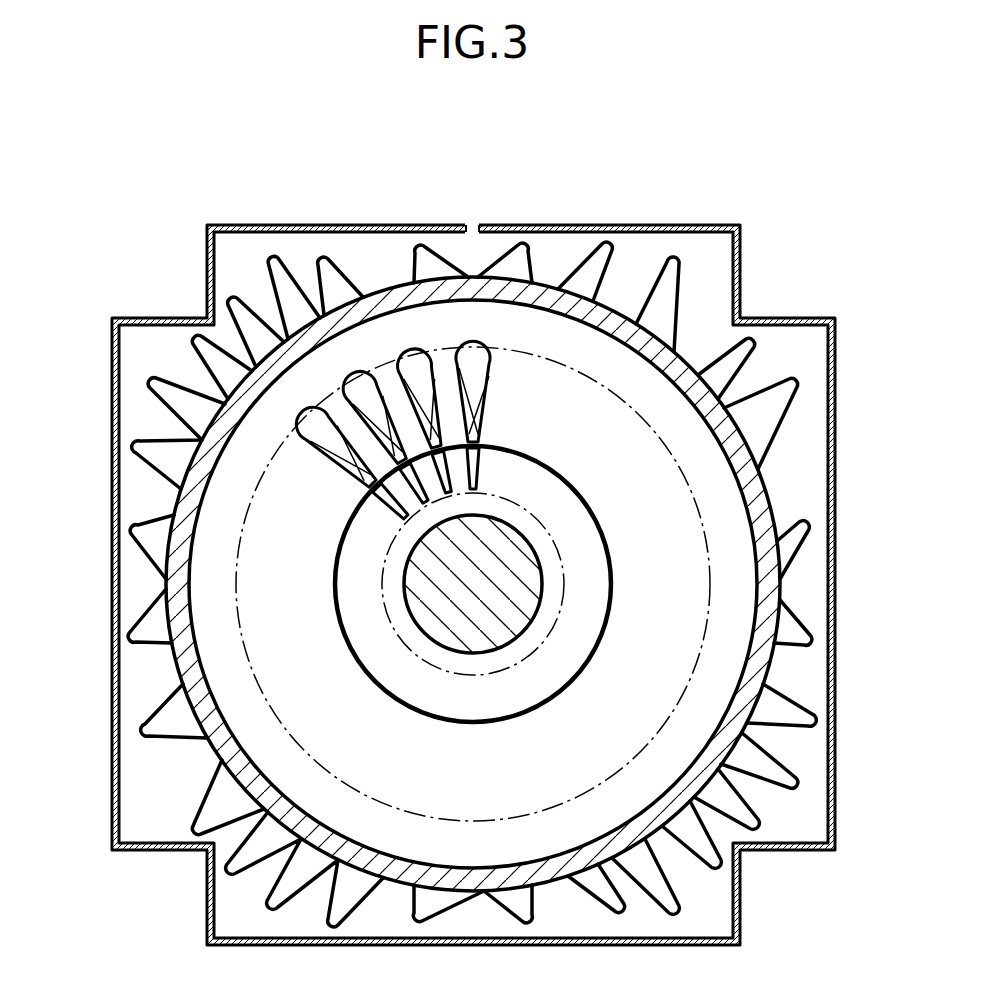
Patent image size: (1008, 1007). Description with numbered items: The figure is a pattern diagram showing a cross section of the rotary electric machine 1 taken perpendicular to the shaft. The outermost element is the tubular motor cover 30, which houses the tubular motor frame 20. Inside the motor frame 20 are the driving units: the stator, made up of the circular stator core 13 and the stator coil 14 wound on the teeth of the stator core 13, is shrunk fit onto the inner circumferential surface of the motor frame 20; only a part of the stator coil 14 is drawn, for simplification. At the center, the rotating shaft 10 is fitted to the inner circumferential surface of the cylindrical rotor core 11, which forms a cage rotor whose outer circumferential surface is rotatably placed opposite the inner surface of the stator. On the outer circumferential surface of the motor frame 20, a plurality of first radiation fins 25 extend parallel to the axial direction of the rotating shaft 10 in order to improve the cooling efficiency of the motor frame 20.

The rotary electric machine 1 is at (726, 156).
The rotating shaft 10 is at (425, 597).
The rotor core 11 is at (357, 563).
The stator core 13 is at (473, 318).
The stator coil 14 is at (417, 367).
The motor frame 20 is at (763, 513).
The first radiation fins 25 is at (673, 268).
The motor cover 30 is at (113, 800).